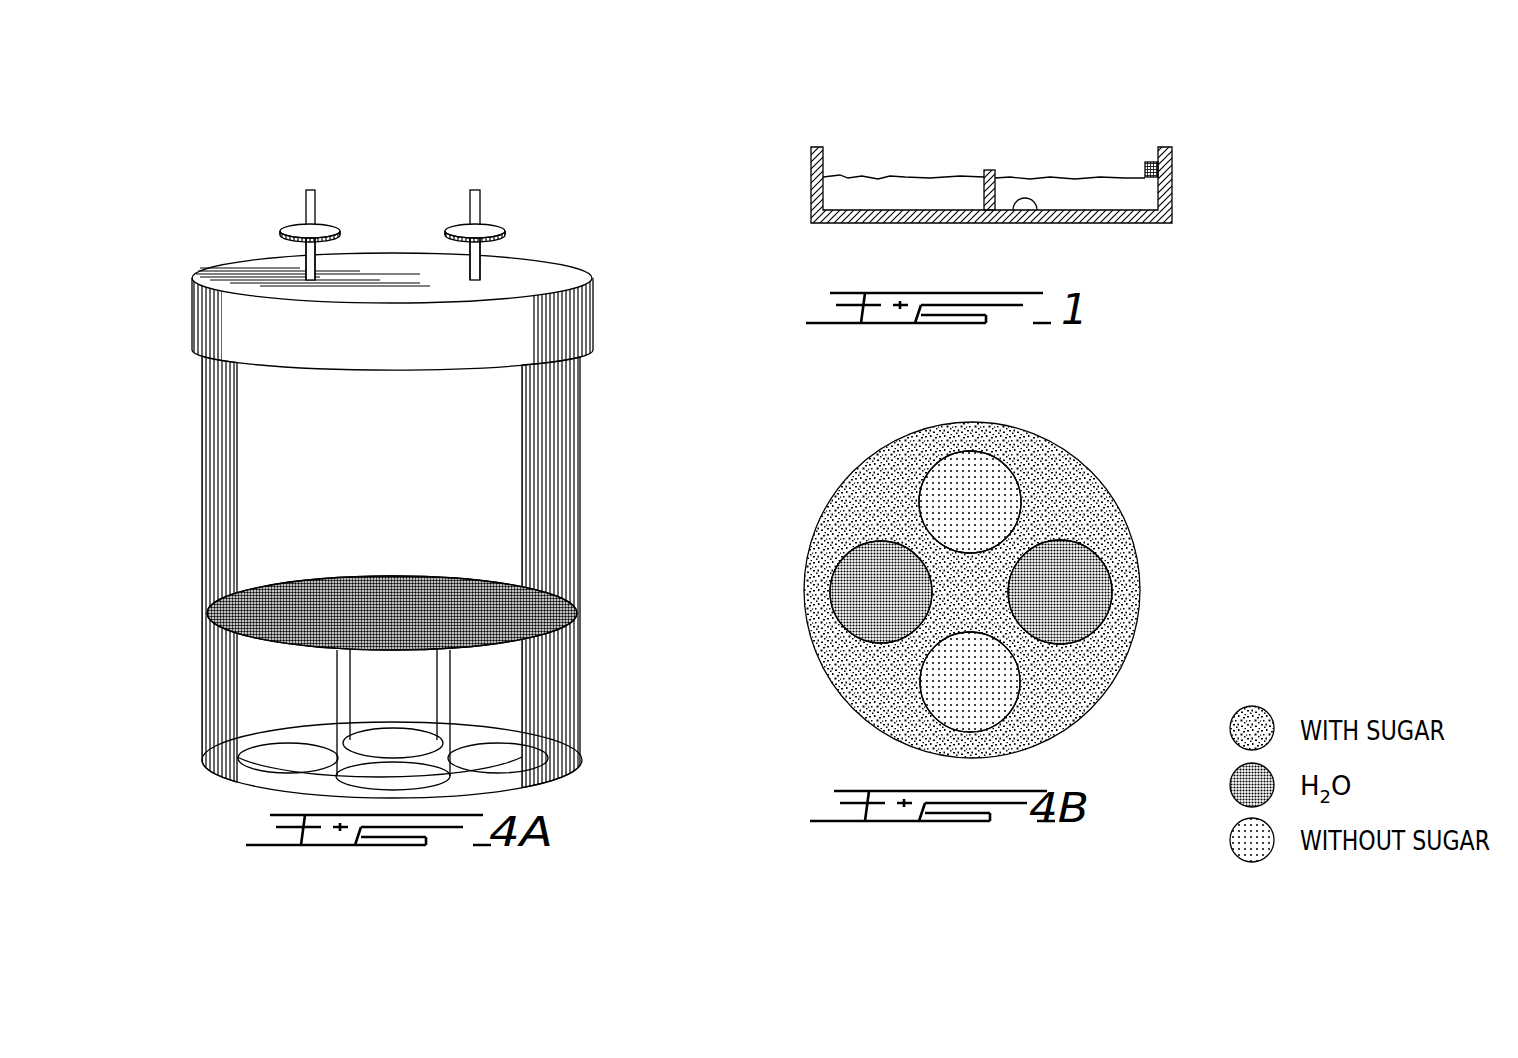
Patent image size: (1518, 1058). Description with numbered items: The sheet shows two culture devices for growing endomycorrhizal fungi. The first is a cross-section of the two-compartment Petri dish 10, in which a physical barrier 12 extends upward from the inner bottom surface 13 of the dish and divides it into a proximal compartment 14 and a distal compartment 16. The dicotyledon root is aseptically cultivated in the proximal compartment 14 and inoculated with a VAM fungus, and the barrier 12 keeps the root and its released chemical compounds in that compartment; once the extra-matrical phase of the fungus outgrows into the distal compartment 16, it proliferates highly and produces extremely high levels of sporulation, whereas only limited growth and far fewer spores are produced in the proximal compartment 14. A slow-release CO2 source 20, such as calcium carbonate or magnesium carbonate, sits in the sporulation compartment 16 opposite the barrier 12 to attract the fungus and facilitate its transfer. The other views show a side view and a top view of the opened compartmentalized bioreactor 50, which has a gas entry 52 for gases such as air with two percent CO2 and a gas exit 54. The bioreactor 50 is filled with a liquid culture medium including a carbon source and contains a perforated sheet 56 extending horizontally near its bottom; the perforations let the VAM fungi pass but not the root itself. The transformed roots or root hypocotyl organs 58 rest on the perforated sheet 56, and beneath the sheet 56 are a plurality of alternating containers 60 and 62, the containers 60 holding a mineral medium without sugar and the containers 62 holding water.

In FIG. 1, the two-compartment Petri dish 10 is at (1205, 157).
In FIG. 1, the physical barrier 12 is at (990, 169).
In FIG. 1, the inner bottom surface 13 is at (1037, 210).
In FIG. 1, the proximal compartment 14 is at (823, 136).
In FIG. 1, the distal compartment 16 is at (998, 136).
In FIG. 1, the CO2 source 20 is at (1151, 162).
In FIG. 4A, the compartmentalized bioreactor 50 is at (640, 224).
In FIG. 4B, the compartmentalized bioreactor 50 is at (1078, 460).
In FIG. 4A, the gas entry 52 is at (310, 125).
In FIG. 4A, the gas exit 54 is at (475, 190).
In FIG. 4A, the perforated sheet 56 is at (568, 600).
In FIG. 4A, the root hypocotyl organs 58 is at (288, 575).
In FIG. 4A, the containers with mineral medium without sugar 60 is at (236, 716).
In FIG. 4B, the containers with mineral medium without sugar 60 is at (1017, 714).
In FIG. 4A, the containers with H2O 62 is at (550, 719).
In FIG. 4B, the containers with H2O 62 is at (1112, 612).